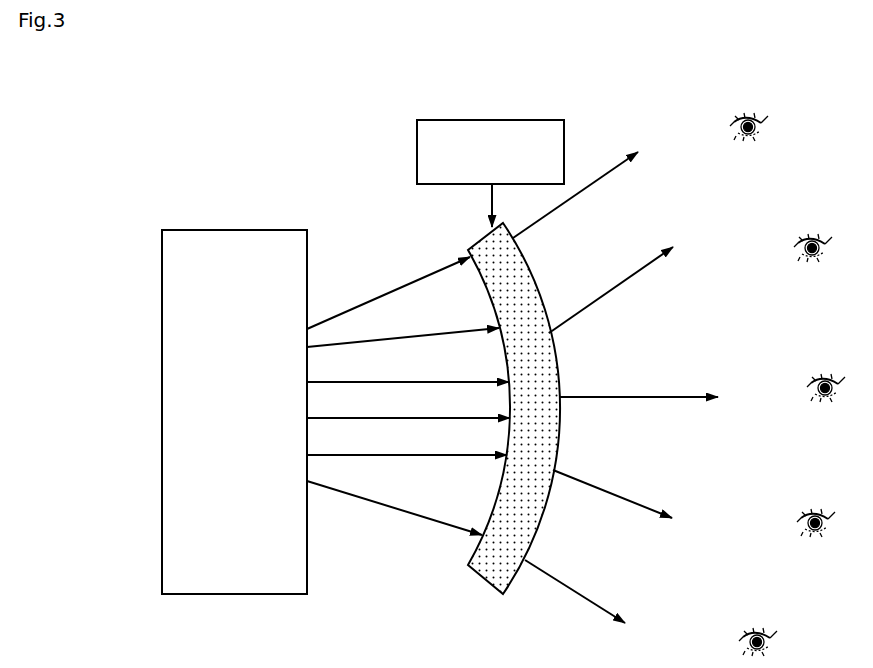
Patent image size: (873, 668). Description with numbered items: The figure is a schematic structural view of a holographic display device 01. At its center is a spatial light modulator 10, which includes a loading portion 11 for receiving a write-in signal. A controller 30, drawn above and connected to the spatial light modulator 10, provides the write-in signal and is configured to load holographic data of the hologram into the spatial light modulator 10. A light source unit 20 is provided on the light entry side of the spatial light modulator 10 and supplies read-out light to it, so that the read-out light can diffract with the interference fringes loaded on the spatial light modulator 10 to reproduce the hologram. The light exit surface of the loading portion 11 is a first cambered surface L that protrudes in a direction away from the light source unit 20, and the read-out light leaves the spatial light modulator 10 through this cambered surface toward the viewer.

The holographic display device 01 is at (440, 358).
The light source unit 20 is at (283, 260).
The controller 30 is at (543, 128).
The spatial light modulator 10 is at (458, 421).
The loading portion 11 is at (473, 575).
The first cambered surface L is at (558, 365).